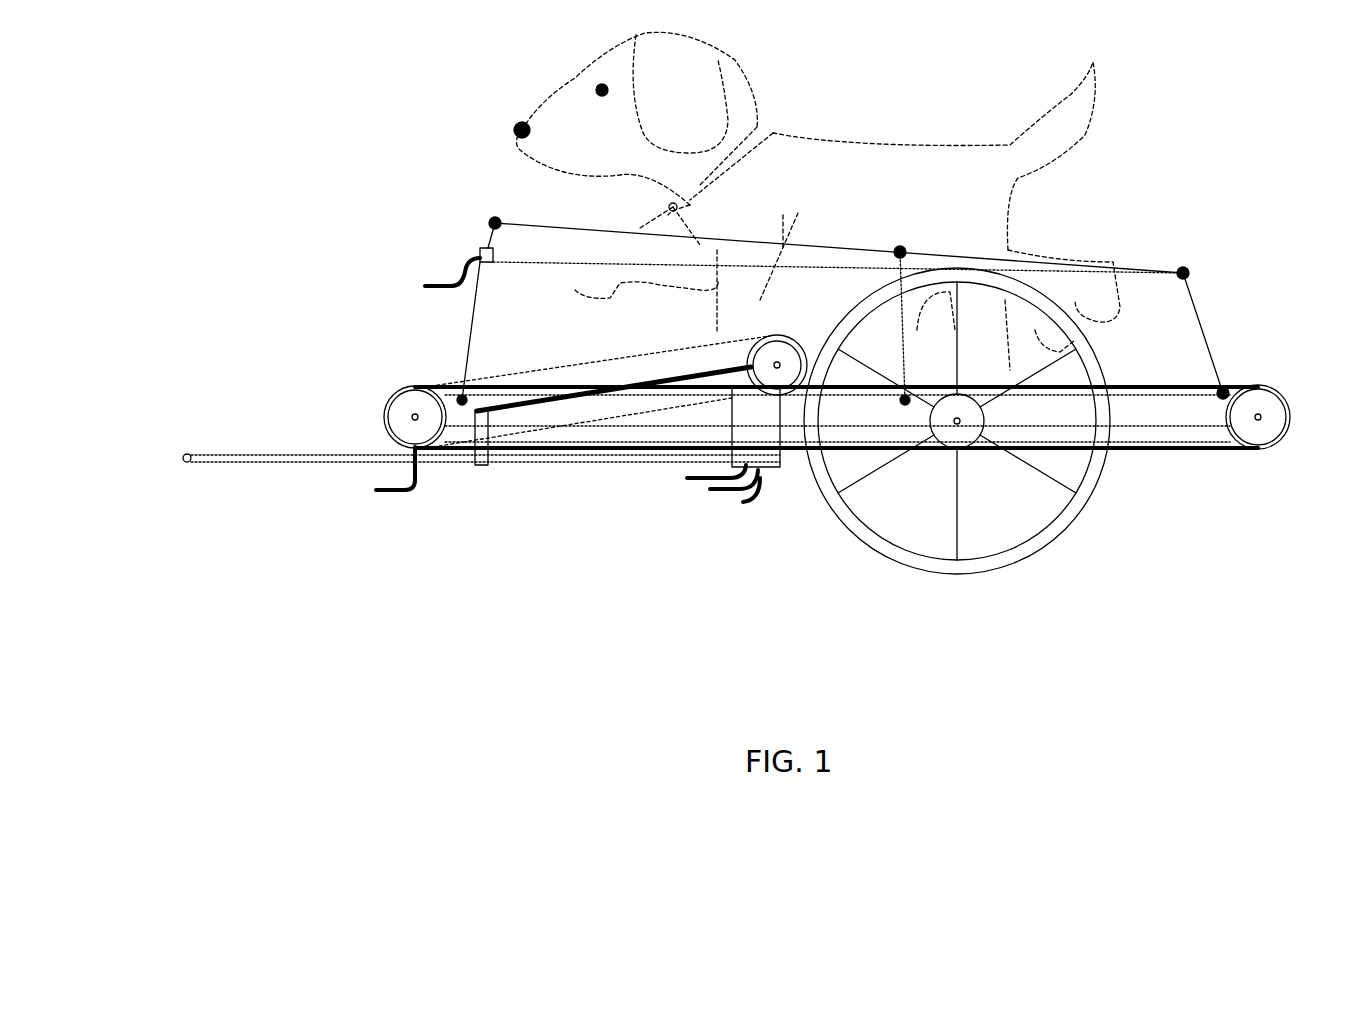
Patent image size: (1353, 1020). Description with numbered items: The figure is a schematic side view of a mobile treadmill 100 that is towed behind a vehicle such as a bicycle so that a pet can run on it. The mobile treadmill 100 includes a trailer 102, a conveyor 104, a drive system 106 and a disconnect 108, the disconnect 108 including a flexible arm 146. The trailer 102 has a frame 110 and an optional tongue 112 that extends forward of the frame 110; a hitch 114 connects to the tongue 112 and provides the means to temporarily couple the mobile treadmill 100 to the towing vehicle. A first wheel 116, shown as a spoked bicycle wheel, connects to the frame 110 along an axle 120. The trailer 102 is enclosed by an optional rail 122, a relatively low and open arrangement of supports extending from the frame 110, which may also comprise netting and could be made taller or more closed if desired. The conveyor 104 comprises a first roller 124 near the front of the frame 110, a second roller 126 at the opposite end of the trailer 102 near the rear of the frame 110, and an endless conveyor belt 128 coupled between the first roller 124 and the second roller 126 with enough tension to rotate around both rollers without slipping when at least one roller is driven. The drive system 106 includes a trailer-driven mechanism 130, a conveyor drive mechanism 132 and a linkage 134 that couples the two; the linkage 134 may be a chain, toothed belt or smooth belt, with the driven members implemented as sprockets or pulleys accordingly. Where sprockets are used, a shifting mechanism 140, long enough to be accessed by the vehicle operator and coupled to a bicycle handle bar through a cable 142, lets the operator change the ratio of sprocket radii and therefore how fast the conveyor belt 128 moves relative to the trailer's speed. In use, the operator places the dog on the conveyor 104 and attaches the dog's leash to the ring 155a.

The mobile treadmill 100 is at (247, 172).
The trailer 102 is at (1190, 566).
The conveyor 104 is at (1170, 371).
The drive system 106 is at (585, 560).
The disconnect 108 is at (965, 464).
The frame 110 is at (1157, 430).
The tongue 112 is at (268, 466).
The hitch 114 is at (187, 465).
The first wheel 116 is at (1105, 487).
The axle 120 is at (957, 424).
The rail 122 is at (1160, 270).
The first roller 124 is at (463, 465).
The second roller 126 is at (1283, 437).
The conveyor belt 128 is at (1230, 450).
The trailer-driven mechanism 130 is at (806, 333).
The conveyor drive mechanism 132 is at (378, 388).
The linkage 134 is at (640, 428).
The shifting mechanism 140 is at (387, 447).
The cable 142 is at (422, 455).
The flexible arm 146 is at (550, 430).
The ring 155a is at (480, 248).